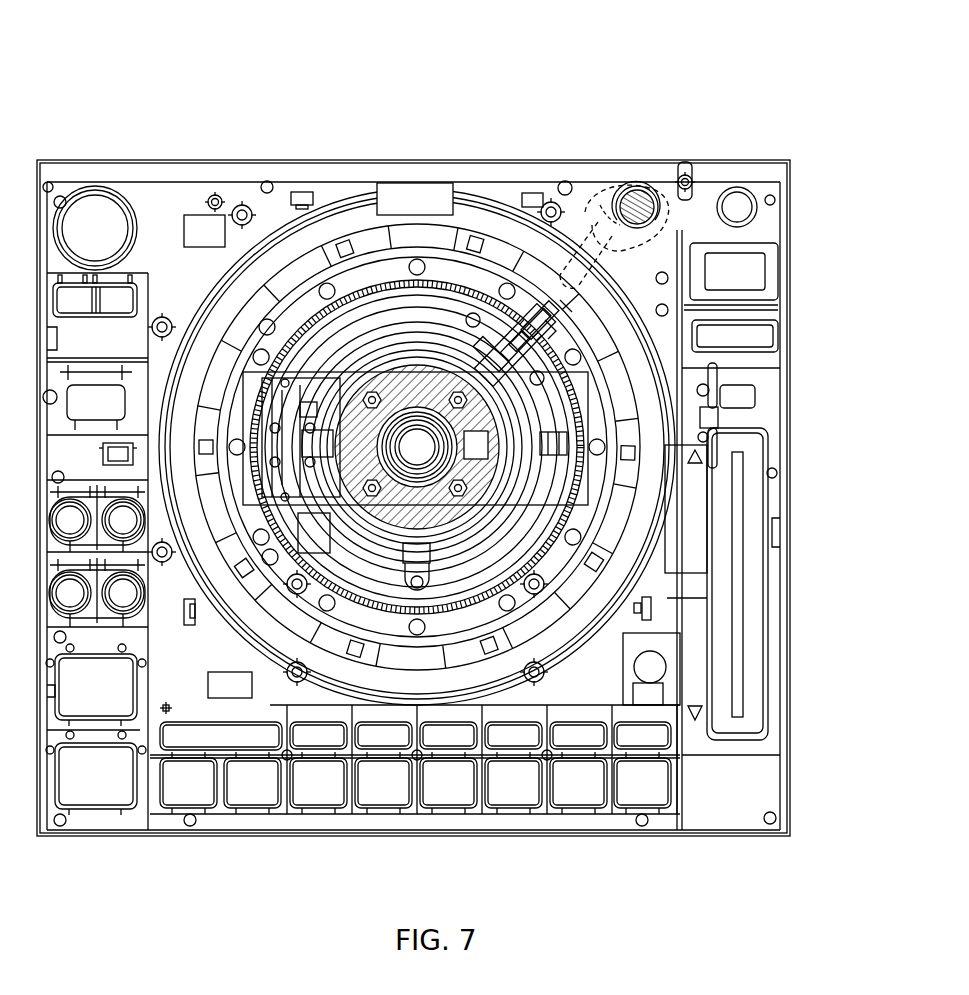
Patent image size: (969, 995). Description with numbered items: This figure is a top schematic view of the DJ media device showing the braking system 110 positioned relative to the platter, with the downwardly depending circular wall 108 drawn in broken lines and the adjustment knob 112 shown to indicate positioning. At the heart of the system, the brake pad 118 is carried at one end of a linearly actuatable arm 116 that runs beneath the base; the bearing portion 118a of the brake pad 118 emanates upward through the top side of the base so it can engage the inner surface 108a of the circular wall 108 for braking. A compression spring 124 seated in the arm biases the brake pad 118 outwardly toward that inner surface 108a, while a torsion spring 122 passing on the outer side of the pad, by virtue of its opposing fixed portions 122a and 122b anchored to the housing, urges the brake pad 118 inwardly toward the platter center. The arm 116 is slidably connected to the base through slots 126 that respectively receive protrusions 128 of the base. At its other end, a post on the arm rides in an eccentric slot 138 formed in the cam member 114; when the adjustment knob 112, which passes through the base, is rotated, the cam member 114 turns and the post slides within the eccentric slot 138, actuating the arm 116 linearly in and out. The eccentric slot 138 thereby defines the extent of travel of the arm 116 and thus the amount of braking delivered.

The downwardly depending wall 108 is at (490, 577).
The inner surface 108a is at (470, 598).
The braking system 110 is at (605, 190).
The adjustment knob 112 is at (639, 188).
The cam member 114 is at (694, 186).
The arm 116 is at (552, 330).
The brake pad 118 is at (518, 306).
The bearing portion 118a is at (490, 320).
The torsion spring 122 is at (470, 316).
The fixed portion 122a is at (500, 366).
The fixed portion 122b is at (508, 370).
The compression spring 124 is at (473, 506).
The slots 126 is at (523, 322).
The protrusions 128 is at (541, 300).
The eccentric slot 138 is at (595, 256).